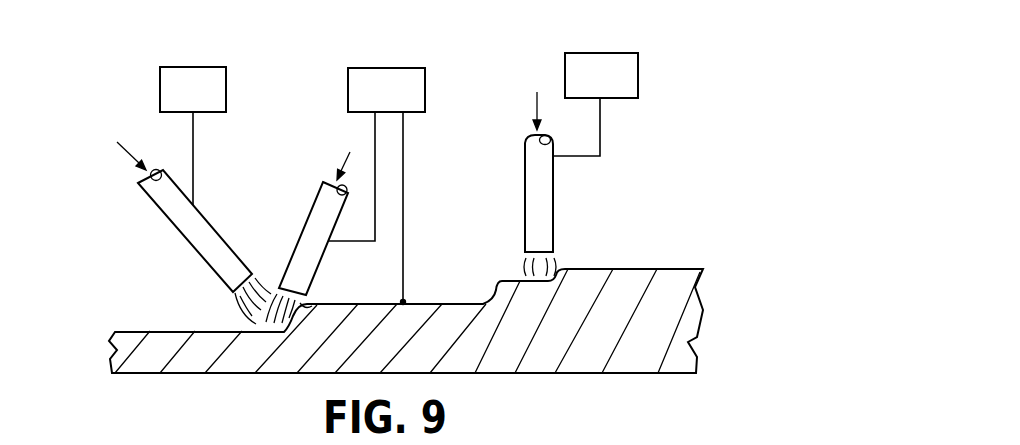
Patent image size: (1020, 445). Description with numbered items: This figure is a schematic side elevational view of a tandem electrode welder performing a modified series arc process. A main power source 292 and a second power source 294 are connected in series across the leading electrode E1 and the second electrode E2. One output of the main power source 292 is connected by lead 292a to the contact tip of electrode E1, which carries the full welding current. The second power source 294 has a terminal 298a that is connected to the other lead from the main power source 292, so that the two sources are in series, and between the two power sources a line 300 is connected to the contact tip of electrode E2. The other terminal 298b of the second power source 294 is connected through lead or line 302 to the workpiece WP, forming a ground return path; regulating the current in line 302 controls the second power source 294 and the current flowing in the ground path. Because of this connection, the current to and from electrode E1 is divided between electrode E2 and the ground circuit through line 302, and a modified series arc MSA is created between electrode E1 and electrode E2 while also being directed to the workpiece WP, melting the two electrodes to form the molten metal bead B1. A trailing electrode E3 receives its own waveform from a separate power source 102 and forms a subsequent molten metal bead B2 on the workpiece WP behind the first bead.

The main power source 292 is at (160, 82).
The lead 292a is at (193, 135).
The second power source 294 is at (348, 80).
The terminal 298a is at (372, 115).
The terminal 298b is at (405, 115).
The line 300 is at (377, 193).
The lead or line 302 is at (405, 245).
The power source 102 is at (638, 75).
The electrode E1 is at (175, 228).
The electrode E2 is at (313, 210).
The trailing electrode E3 is at (553, 198).
The modified series arc MSA is at (237, 303).
The molten metal bead B1 is at (333, 305).
The molten metal bead B2 is at (587, 268).
The workpiece WP is at (676, 262).